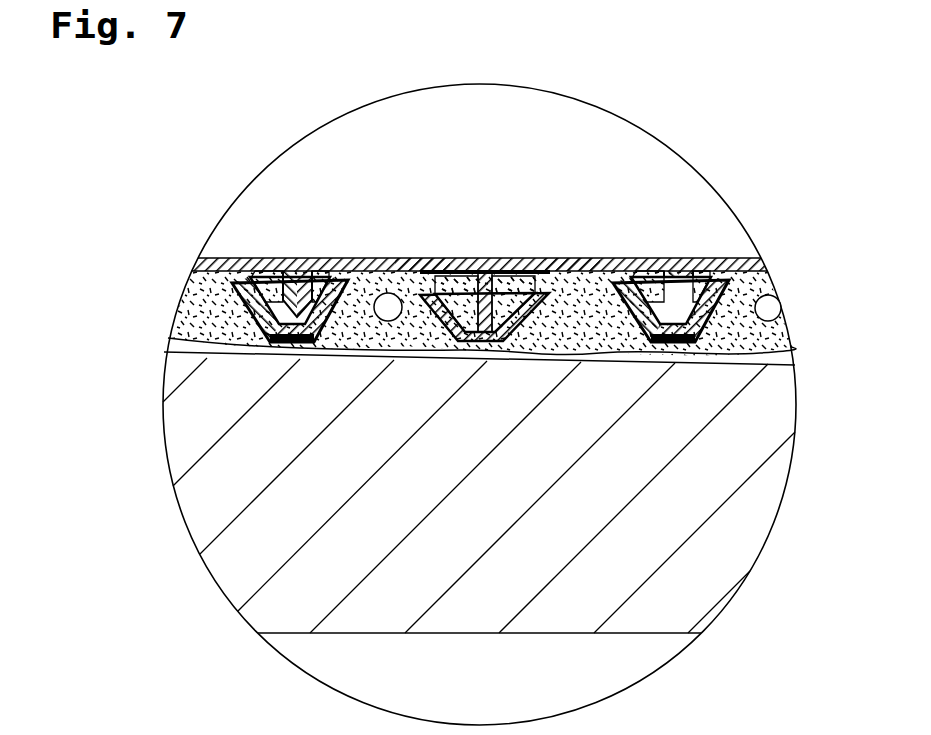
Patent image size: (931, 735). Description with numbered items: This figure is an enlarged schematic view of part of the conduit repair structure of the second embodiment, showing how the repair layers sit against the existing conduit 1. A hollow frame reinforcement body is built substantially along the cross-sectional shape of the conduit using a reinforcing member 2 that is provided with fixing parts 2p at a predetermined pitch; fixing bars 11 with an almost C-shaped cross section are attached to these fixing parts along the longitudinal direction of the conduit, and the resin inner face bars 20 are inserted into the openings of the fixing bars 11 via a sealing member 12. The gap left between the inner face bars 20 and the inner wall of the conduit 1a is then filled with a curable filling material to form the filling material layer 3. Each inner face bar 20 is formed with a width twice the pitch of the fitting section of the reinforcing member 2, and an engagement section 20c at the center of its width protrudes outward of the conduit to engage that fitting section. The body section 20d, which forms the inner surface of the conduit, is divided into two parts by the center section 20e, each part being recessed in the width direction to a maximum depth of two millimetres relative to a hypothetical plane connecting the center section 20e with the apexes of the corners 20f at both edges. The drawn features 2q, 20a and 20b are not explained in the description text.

The existing conduit 1 is at (695, 562).
The inner wall of the conduit 1a is at (222, 352).
The reinforcing member 2 is at (780, 345).
The fixing part 2p is at (538, 297).
The boundary portion 2q is at (333, 358).
The filling material layer 3 is at (197, 325).
The fixing bar 11 is at (650, 335).
The sealing member 12 is at (682, 342).
The inner face bar 20 is at (712, 262).
The engaging portion 20a is at (325, 258).
The engaging portion 20b is at (648, 260).
The engagement section 20c is at (488, 343).
The body section 20d is at (421, 258).
The center section 20e is at (485, 258).
The corner 20f is at (300, 258).